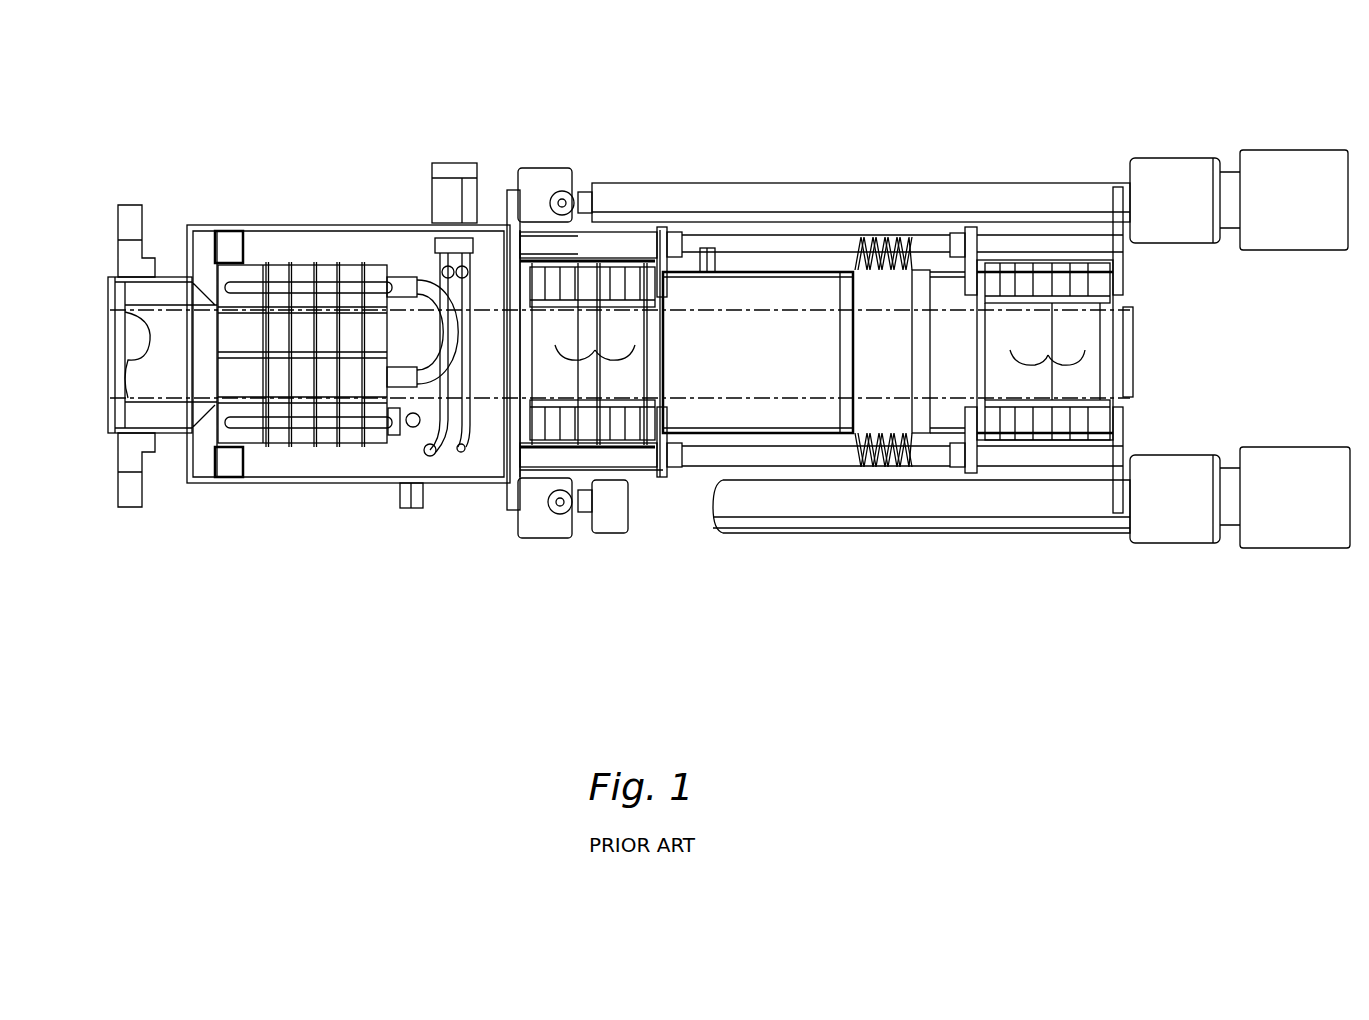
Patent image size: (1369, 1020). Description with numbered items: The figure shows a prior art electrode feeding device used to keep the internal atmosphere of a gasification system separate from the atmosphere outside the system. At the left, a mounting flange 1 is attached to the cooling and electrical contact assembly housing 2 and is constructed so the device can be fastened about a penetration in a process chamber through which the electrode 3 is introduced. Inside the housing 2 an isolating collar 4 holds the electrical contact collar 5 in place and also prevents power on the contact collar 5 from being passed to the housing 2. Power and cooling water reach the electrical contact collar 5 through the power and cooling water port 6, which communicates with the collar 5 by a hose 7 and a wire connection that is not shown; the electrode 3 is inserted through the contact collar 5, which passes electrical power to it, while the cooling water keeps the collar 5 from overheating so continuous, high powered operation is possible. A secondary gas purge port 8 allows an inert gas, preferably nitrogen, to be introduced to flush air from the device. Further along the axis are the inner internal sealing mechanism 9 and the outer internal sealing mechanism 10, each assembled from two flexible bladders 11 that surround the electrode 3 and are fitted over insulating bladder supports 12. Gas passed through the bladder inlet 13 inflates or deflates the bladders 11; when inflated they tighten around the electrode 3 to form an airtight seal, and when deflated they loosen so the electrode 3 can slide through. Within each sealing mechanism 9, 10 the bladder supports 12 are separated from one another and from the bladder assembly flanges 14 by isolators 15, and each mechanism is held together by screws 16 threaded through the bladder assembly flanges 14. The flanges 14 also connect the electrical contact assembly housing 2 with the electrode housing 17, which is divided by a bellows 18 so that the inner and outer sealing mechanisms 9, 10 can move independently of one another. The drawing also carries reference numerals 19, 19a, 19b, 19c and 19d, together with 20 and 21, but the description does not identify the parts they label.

The mounting flange 1 is at (122, 205).
The cooling and electrical contact assembly housing 2 is at (255, 483).
The electrode 3 is at (160, 380).
The isolating collar 4 is at (230, 228).
The electrical contact collar 5 is at (276, 250).
The power and cooling water port 6 is at (455, 167).
The hose 7 is at (415, 278).
The secondary gas purge port 8 is at (417, 508).
The inner internal sealing mechanism 9 is at (590, 370).
The outer internal sealing mechanism 10 is at (1045, 375).
The flexible bladders 11 is at (575, 215).
The insulating bladder supports 12 is at (632, 270).
The bladder inlet 13 is at (1078, 250).
The bladder assembly flanges 14 is at (972, 240).
The isolators 15 is at (575, 445).
The screws 16 is at (1028, 240).
The electrode housing 17 is at (765, 433).
The bellows 18 is at (888, 240).
The actuator 19 is at (1084, 568).
The motor 19a is at (1288, 548).
The gear box 19b is at (1177, 543).
The lower rod 19c is at (855, 535).
The bracket 19d is at (577, 540).
The mounting plate 20 is at (518, 210).
The stop 21 is at (705, 250).